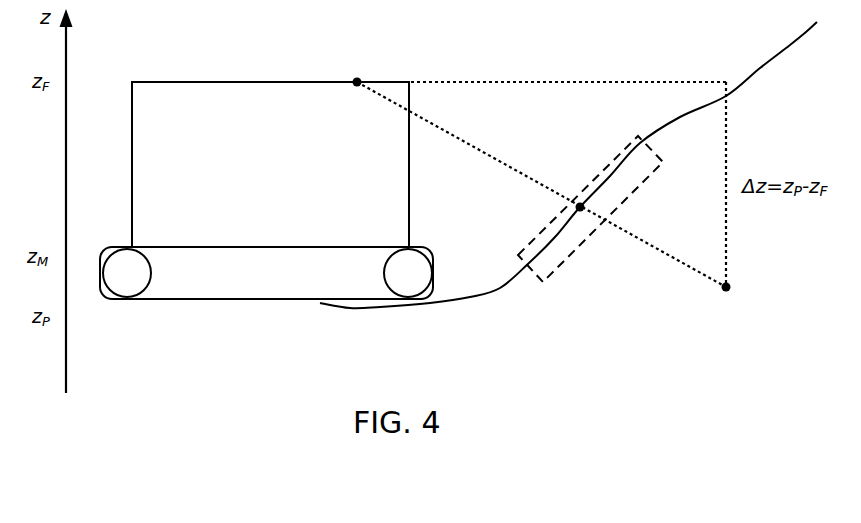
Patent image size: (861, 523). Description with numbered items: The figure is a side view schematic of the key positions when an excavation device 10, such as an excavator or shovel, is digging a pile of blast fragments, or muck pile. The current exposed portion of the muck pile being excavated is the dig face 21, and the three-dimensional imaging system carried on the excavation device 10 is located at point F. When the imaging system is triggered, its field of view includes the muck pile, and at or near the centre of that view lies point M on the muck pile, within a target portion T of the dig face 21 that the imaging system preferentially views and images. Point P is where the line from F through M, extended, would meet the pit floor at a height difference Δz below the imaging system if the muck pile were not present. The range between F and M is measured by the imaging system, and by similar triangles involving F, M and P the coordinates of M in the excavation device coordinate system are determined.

The excavation device 10 is at (186, 128).
The dig face 21 is at (688, 117).
The location of the 3D imaging system F is at (347, 70).
The point on the muck pile M is at (580, 204).
The target portion T is at (585, 238).
The point on the pit floor P is at (741, 274).